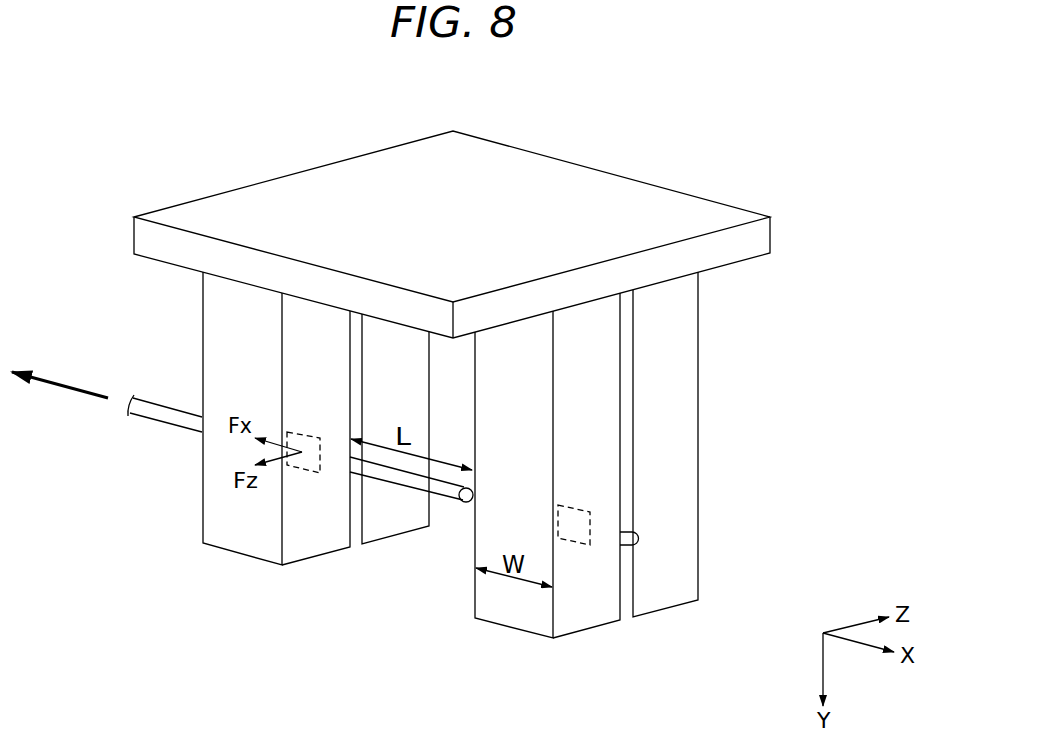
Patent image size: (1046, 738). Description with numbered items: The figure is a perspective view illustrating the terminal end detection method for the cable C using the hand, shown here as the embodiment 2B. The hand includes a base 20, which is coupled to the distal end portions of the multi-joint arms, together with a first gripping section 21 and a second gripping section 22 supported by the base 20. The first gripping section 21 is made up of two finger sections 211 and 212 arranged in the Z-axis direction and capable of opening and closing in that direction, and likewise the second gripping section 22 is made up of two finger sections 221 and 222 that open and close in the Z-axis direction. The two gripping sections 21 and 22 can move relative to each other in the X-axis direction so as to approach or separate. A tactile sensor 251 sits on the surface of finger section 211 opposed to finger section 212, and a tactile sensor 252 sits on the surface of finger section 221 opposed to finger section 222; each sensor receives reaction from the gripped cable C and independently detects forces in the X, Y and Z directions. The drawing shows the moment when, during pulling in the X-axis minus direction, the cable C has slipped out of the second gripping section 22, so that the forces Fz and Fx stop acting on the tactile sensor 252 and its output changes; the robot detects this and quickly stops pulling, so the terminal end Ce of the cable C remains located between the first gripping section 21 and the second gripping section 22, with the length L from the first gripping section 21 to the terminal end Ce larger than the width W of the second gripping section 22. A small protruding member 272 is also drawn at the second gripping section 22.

The force sensor device 2B is at (605, 162).
The base 20 is at (340, 188).
The first gripping section 21 is at (228, 500).
The finger section 211 is at (223, 320).
The finger section 212 is at (380, 395).
The second gripping section 22 is at (665, 379).
The finger section 221 is at (587, 437).
The finger section 222 is at (680, 323).
The tactile sensor 251 is at (313, 470).
The tactile sensor 252 is at (583, 543).
The shaft protrusion 272 is at (640, 542).
The cable C is at (395, 477).
The terminal end Ce is at (467, 502).